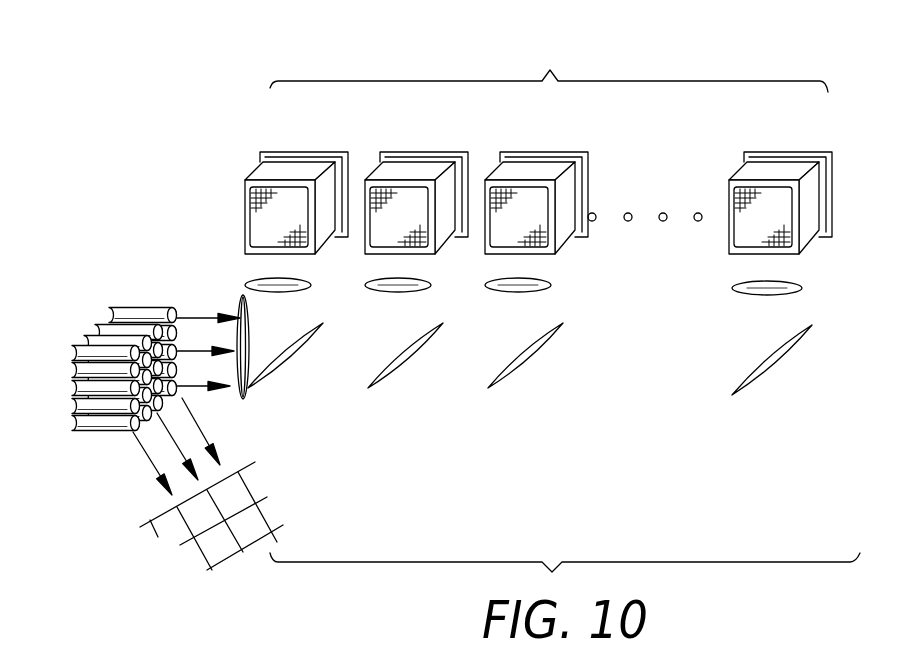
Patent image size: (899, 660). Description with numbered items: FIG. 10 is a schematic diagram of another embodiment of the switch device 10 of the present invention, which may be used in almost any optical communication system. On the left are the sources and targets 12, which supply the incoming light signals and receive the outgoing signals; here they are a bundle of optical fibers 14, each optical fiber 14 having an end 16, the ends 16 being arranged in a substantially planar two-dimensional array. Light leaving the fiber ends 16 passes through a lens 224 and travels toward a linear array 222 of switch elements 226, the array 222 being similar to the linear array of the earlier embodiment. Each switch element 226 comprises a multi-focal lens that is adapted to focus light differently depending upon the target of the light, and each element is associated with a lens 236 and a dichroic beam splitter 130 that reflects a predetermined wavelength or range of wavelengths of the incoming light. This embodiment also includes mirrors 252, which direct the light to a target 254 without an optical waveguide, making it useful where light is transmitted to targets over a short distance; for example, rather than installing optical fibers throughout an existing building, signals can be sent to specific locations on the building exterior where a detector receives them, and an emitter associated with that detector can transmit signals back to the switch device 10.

The switch device 10 is at (223, 128).
The sources and targets 12 is at (102, 332).
The optical fiber 14 is at (128, 312).
The end 16 is at (175, 318).
The beam splitter 130 is at (277, 373).
The linear array 222 is at (550, 70).
The collimating lens 224 is at (246, 300).
The switch element 226 is at (277, 150).
The lens 236 is at (311, 285).
The mirrors 252 is at (131, 432).
The target 254 is at (197, 550).